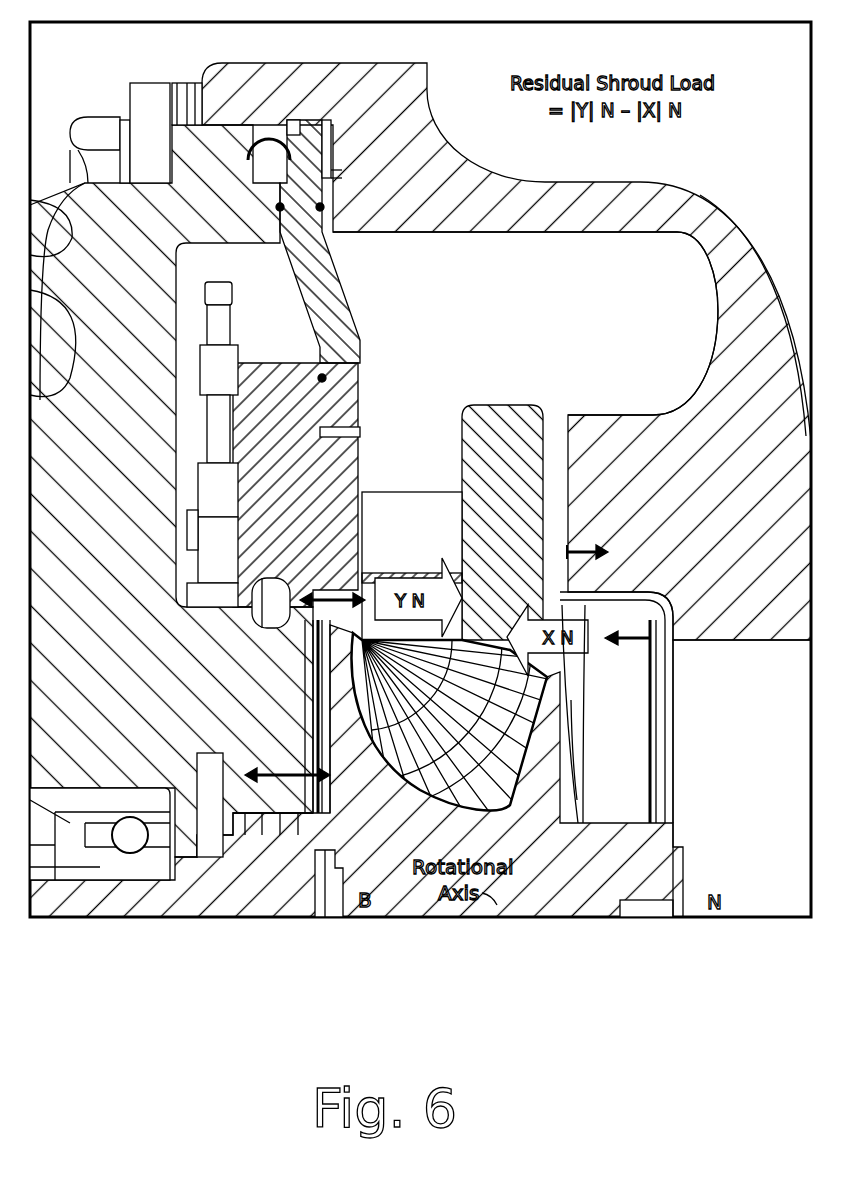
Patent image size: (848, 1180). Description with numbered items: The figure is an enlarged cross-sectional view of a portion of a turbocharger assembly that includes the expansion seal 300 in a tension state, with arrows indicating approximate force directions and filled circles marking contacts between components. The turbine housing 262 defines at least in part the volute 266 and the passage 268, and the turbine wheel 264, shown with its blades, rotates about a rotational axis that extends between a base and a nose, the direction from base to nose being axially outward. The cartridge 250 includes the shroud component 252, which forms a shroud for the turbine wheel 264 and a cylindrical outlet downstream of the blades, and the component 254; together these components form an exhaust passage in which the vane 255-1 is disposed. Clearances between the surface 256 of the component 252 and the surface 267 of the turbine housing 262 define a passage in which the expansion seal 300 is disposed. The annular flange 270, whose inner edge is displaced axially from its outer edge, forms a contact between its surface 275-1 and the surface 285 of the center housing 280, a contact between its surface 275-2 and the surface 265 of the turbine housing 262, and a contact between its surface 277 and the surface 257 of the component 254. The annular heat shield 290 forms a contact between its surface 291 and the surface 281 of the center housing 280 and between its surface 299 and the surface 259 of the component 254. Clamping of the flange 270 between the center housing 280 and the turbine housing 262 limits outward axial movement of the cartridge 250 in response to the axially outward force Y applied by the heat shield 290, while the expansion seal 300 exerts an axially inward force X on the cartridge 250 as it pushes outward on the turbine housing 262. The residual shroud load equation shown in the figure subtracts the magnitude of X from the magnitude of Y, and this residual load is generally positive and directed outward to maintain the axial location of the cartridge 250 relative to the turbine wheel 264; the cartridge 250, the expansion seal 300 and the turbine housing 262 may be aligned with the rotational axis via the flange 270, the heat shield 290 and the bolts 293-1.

The cartridge 250 is at (533, 367).
The component 252 is at (523, 536).
The component 254 is at (325, 506).
The vane 255-1 is at (412, 567).
The surface 256 is at (645, 655).
The surface 257 is at (322, 378).
The surface 259 is at (322, 575).
The turbine housing 262 is at (728, 489).
The turbine wheel 264 is at (356, 771).
The surface 265 is at (320, 207).
The volute 266 is at (548, 286).
The surface 267 is at (575, 525).
The passage 268 is at (761, 734).
The flange 270 is at (355, 320).
The surface 275-1 is at (333, 256).
The surface 275-2 is at (333, 237).
The surface 277 is at (323, 378).
The center housing 280 is at (117, 563).
The surface 281 is at (302, 760).
The surface 285 is at (280, 207).
The heat shield 290 is at (303, 690).
The surface 291 is at (333, 793).
The bolt 293-1 is at (75, 117).
The surface 299 is at (288, 625).
The expansion seal 300 is at (635, 587).